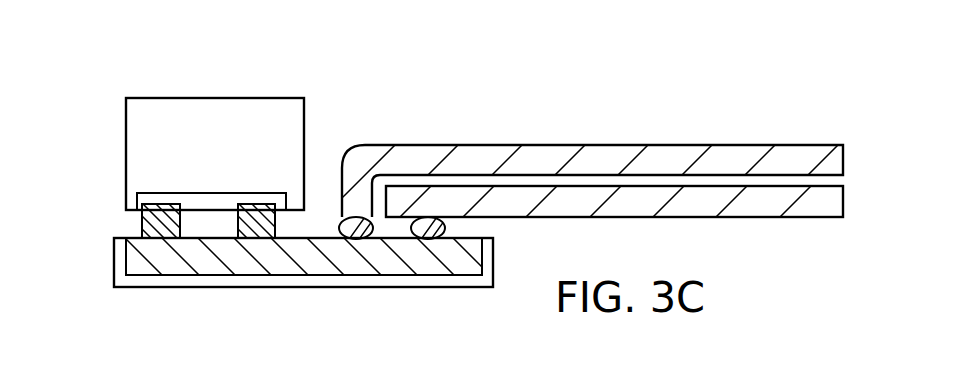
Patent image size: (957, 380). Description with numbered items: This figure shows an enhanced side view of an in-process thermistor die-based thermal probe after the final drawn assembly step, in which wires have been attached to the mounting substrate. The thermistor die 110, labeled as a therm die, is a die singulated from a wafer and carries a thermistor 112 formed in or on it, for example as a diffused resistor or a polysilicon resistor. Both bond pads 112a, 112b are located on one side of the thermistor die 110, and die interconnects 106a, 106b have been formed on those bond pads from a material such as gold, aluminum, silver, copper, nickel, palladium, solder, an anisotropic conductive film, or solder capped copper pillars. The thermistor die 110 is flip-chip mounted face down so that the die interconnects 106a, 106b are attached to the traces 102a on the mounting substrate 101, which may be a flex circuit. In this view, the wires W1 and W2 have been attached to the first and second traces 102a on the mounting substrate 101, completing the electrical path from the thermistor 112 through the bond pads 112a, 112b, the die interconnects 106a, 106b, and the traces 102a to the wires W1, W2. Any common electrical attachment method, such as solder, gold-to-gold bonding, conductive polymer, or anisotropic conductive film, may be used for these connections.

The thermistor die 110 is at (212, 108).
The thermistor 112 is at (146, 186).
The bond pad 112a is at (168, 205).
The bond pad 112b is at (255, 203).
The die interconnect 106a is at (148, 228).
The die interconnect 106b is at (247, 232).
The mounting substrate 101 is at (170, 278).
The traces 102a is at (395, 266).
The wire W1 is at (733, 143).
The wire W2 is at (758, 219).